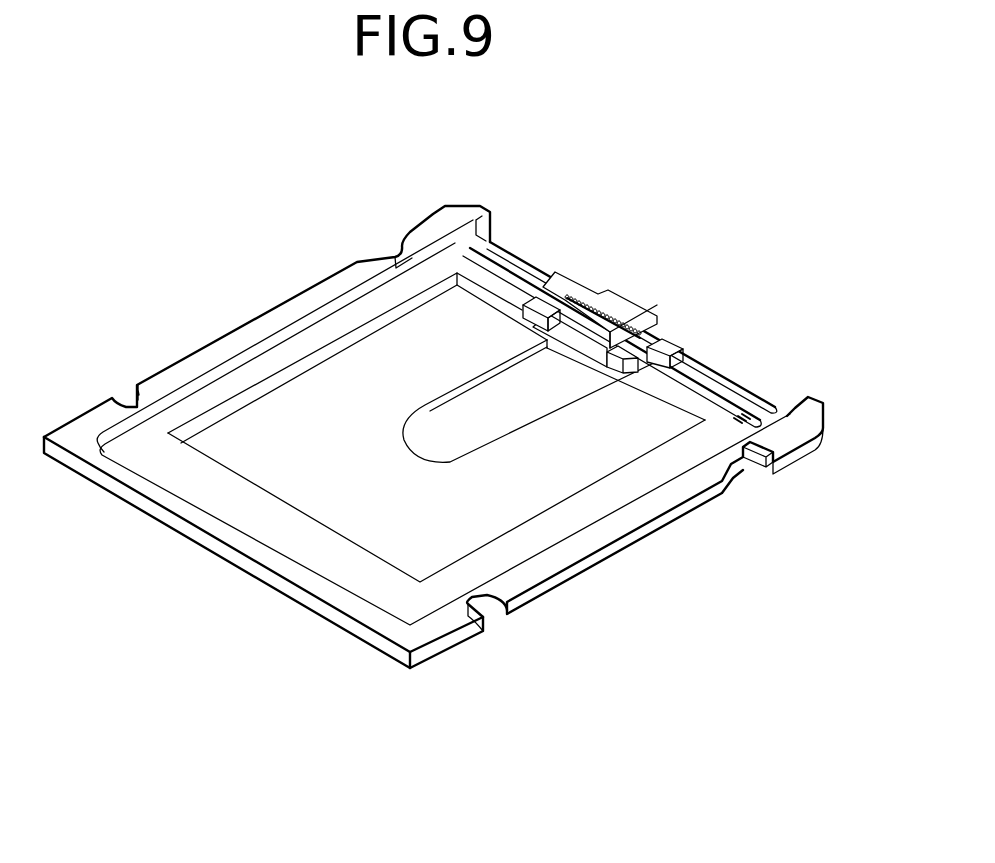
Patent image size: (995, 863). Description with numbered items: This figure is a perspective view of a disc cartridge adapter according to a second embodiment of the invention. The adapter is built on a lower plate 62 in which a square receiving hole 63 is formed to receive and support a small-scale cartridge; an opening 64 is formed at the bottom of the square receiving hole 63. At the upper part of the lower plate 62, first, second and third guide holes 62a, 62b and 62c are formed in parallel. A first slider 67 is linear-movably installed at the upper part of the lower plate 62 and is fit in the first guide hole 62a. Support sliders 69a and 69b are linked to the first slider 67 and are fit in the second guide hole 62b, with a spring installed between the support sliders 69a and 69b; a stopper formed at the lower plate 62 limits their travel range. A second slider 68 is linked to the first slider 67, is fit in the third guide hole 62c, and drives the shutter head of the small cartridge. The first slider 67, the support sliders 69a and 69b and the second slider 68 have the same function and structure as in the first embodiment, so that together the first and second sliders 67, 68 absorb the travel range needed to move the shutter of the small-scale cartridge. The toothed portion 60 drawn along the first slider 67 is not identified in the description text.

The rack teeth 60 is at (636, 335).
The lower plate 62 is at (440, 622).
The first guide hole 62a is at (728, 383).
The second guide hole 62b is at (678, 352).
The third guide hole 62c is at (742, 421).
The square receiving hole 63 is at (505, 473).
The opening 64 is at (527, 403).
The first slider 67 is at (606, 285).
The second slider 68 is at (544, 312).
The support slider 69a is at (543, 300).
The support slider 69b is at (666, 350).